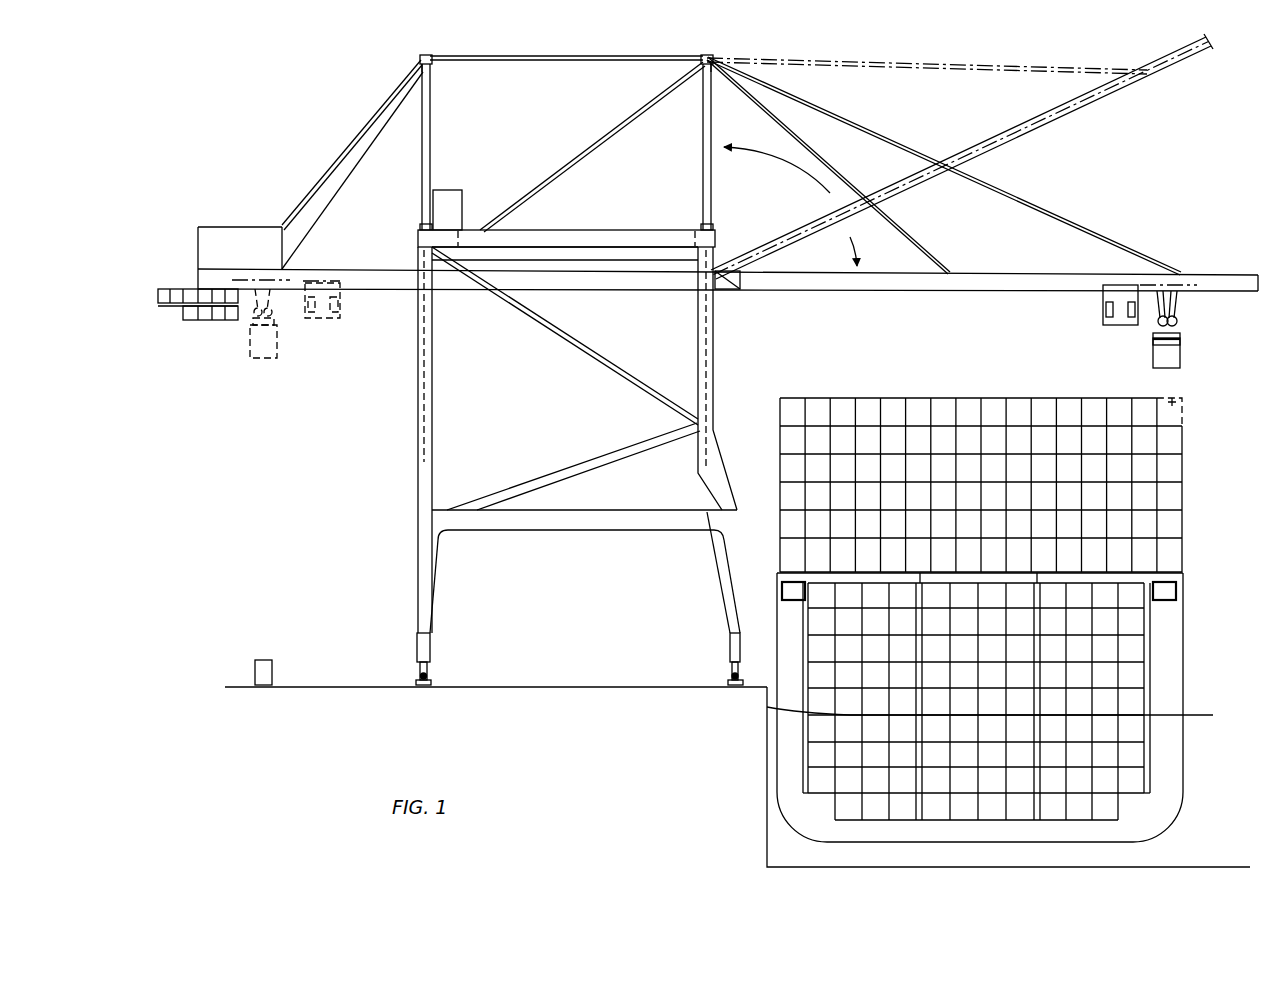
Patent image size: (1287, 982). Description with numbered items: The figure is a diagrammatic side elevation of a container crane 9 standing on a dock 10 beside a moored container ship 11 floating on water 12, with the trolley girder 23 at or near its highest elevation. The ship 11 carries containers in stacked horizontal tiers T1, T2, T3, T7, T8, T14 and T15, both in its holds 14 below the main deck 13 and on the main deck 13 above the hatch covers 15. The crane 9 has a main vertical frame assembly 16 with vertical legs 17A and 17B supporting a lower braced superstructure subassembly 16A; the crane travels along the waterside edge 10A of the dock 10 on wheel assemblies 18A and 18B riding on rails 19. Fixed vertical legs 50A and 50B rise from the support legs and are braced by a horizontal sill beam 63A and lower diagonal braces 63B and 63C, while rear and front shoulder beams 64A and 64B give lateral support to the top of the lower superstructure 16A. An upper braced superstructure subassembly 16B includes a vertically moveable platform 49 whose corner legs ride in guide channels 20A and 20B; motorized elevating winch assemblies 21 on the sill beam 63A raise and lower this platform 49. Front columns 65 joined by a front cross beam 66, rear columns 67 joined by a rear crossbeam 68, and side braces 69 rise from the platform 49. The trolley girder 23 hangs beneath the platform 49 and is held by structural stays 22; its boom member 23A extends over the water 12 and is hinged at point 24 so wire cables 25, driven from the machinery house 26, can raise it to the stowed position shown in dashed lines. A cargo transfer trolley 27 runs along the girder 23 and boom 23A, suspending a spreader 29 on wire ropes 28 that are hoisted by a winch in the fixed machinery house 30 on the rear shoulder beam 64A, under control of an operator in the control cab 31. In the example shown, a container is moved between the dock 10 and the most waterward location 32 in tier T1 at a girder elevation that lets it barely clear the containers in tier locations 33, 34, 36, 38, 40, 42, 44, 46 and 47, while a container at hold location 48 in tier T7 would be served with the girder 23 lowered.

The crane 9 is at (323, 110).
The dock 10 is at (545, 687).
The waterside edge of dock 10A is at (767, 687).
The container ship 11 is at (1194, 680).
The water 12 is at (1203, 715).
The main deck 13 is at (1183, 565).
The holds 14 is at (1152, 670).
The hatch covers 15 is at (800, 580).
The main vertical frame assembly 16 is at (409, 401).
The lower braced superstructure subassembly 16A is at (568, 405).
The upper braced superstructure subassembly 16B is at (578, 139).
The vertical leg 17A is at (436, 565).
The vertical leg 17B is at (718, 572).
The support wheel assembly 18A is at (432, 648).
The support wheel assembly 18B is at (730, 648).
The rails 19 is at (416, 680).
The guide channel 20A is at (418, 372).
The guide channel 20B is at (713, 380).
The motorized elevating winch assembly 21 is at (418, 228).
The structural stays 22 is at (355, 210).
The trolley girder 23 is at (402, 288).
The boom member 23A is at (1015, 142).
The hinge point 24 is at (735, 290).
The wire cables 25 is at (330, 172).
The machinery house 26 is at (230, 232).
The cargo transfer trolley 27 is at (240, 280).
The wire ropes 28 is at (270, 305).
The spreader 29 is at (250, 340).
The fixed machinery house 30 is at (445, 190).
The control cab 31 is at (322, 318).
The most waterward container location 32 is at (1175, 398).
The tier location 33 is at (1138, 403).
The tier location 34 is at (1108, 403).
The inner tier location 36 is at (1061, 400).
The inner tier location 38 is at (1018, 400).
The inner tier location 40 is at (966, 404).
The tier location 42 is at (913, 400).
The tier location 44 is at (866, 402).
The tier location 46 is at (815, 404).
The most landward container location 47 is at (790, 398).
The tier location in hold 48 is at (803, 597).
The vertically moveable platform 49 is at (590, 250).
The rear fixed vertical leg 50A is at (432, 345).
The front fixed vertical leg 50B is at (698, 350).
The horizontal sill beam 63A is at (590, 232).
The lower diagonal brace 63B is at (569, 337).
The lower diagonal brace 63C is at (562, 469).
The rear shoulder beam 64A is at (459, 238).
The front shoulder beam 64B is at (694, 238).
The front vertical columns 65 is at (703, 130).
The front cross beam 66 is at (712, 58).
The rear vertical columns 67 is at (430, 150).
The rear crossbeam 68 is at (420, 57).
The side braces 69 is at (560, 176).
The tier T1 is at (1186, 418).
The tier T2 is at (1187, 441).
The tier T3 is at (1188, 475).
The tier T7 is at (1160, 608).
The tier T8 is at (1162, 630).
The tier T14 is at (1159, 782).
The tier T15 is at (1134, 808).